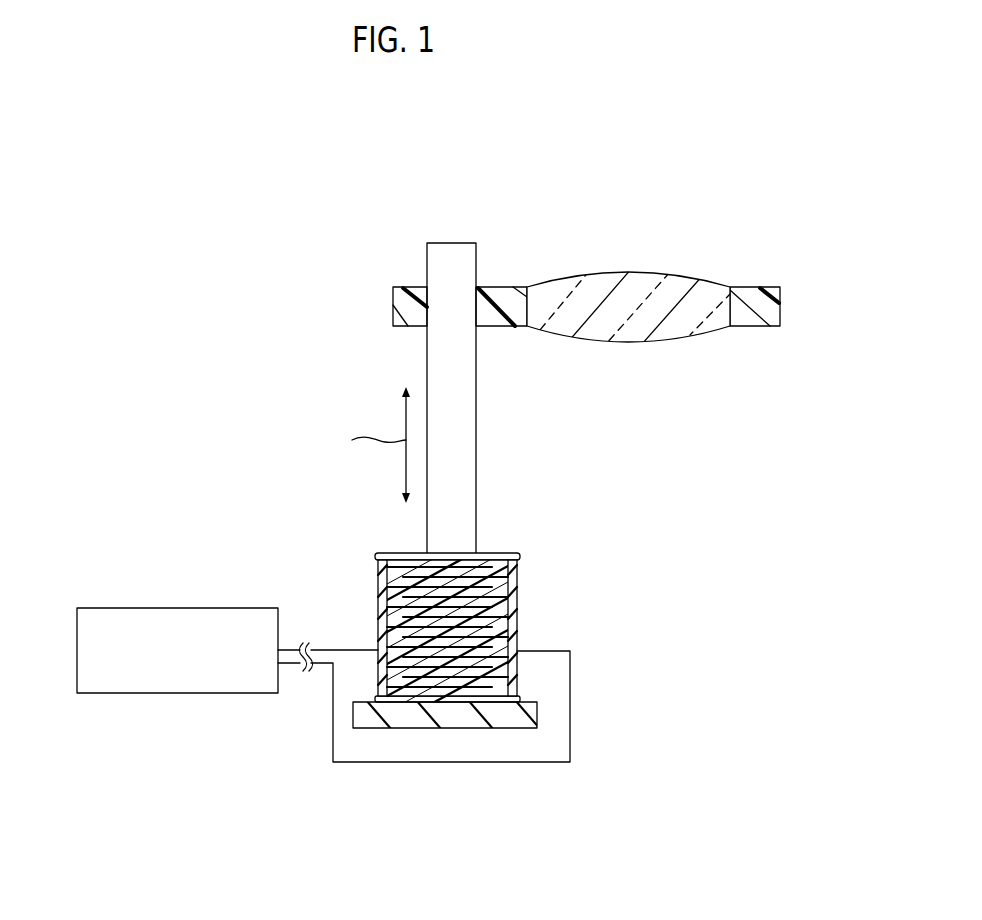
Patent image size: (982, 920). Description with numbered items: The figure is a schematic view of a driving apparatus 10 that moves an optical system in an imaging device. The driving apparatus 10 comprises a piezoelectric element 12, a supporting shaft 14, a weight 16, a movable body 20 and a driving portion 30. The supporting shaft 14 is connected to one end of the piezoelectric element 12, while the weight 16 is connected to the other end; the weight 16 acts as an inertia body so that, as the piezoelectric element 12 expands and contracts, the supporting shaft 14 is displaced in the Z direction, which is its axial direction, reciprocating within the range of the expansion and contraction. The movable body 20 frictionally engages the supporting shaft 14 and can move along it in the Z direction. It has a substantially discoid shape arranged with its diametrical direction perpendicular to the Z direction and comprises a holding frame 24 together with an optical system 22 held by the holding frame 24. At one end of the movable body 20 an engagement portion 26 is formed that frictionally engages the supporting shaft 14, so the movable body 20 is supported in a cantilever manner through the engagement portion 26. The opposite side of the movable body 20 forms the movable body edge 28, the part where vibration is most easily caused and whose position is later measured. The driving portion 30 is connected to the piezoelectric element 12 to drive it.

The driving apparatus 10 is at (258, 320).
The piezoelectric element 12 is at (364, 582).
The supporting shaft 14 is at (431, 363).
The weight 16 is at (510, 717).
The movable body 20 is at (713, 245).
The optical system 22 is at (641, 325).
The holding frame 24 is at (498, 287).
The engagement portion 26 is at (427, 307).
The movable body edge 28 is at (765, 306).
The driving portion 30 is at (172, 608).